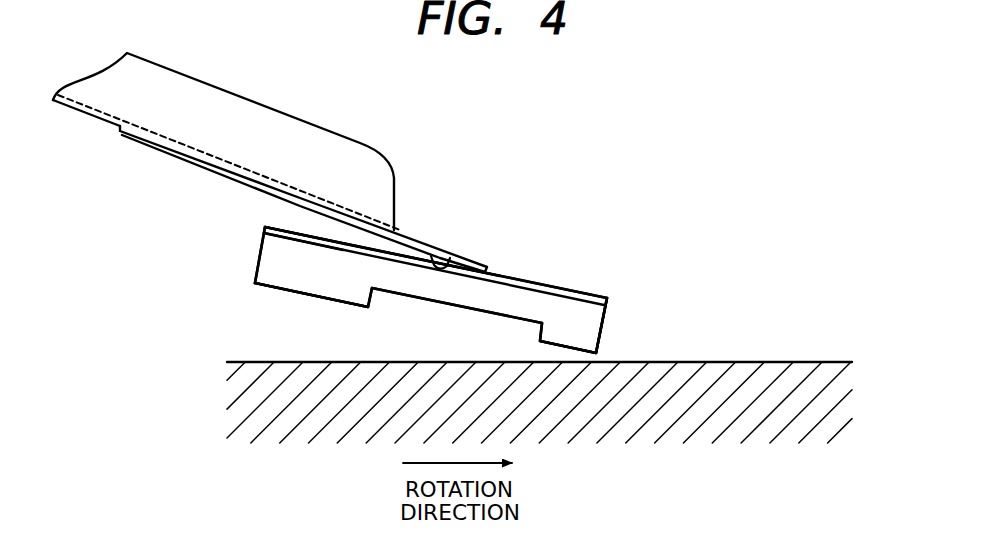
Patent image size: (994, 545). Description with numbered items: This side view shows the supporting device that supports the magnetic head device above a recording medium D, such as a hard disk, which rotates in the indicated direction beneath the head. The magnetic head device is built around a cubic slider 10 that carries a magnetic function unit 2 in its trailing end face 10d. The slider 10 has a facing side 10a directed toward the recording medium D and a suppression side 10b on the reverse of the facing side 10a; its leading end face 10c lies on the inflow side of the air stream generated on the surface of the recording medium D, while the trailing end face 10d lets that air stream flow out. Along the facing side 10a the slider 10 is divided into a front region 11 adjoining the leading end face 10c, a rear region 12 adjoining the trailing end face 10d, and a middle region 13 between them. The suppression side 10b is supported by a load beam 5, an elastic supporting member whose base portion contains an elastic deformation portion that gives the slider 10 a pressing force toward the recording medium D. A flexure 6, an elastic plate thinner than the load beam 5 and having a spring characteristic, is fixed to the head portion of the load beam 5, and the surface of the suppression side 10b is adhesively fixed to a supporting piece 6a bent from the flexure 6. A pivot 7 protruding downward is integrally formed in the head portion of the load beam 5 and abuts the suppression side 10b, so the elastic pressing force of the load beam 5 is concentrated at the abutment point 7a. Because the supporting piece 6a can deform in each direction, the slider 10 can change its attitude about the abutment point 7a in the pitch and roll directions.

The magnetic function unit 2 is at (587, 337).
The load beam 5 is at (283, 133).
The flexure 6 is at (563, 287).
The supporting piece 6a is at (342, 245).
The pivot 7 is at (443, 257).
The abutment point 7a is at (437, 275).
The slider 10 is at (508, 300).
The facing side 10a is at (305, 306).
The suppression side 10b is at (397, 254).
The leading end face 10c is at (260, 252).
The trailing end face 10d is at (607, 322).
The front region 11 is at (273, 288).
The rear region 12 is at (558, 354).
The middle region 13 is at (460, 312).
The recording medium D is at (678, 417).